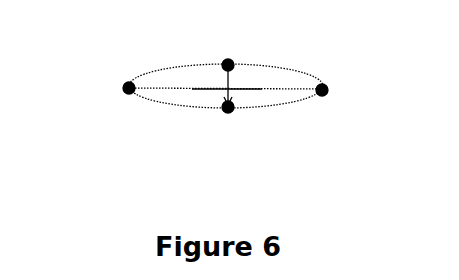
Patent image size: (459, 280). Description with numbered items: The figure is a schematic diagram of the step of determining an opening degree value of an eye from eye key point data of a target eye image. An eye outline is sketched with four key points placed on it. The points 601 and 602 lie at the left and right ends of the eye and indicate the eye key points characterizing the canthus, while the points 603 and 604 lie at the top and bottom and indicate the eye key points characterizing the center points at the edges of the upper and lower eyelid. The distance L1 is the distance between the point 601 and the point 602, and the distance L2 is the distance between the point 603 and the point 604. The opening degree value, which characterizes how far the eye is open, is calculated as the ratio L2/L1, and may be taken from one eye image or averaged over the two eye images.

The eye key point for characterizing canthus 601 is at (123, 92).
The eye key point for characterizing canthus 602 is at (329, 93).
The eye key point for characterizing center point at edge of upper eyelid 603 is at (226, 62).
The eye key point for characterizing center point at edge of lower eyelid 604 is at (233, 112).
The distance between the canthus key points L1 is at (156, 100).
The distance between the eyelid edge center key points L2 is at (258, 68).